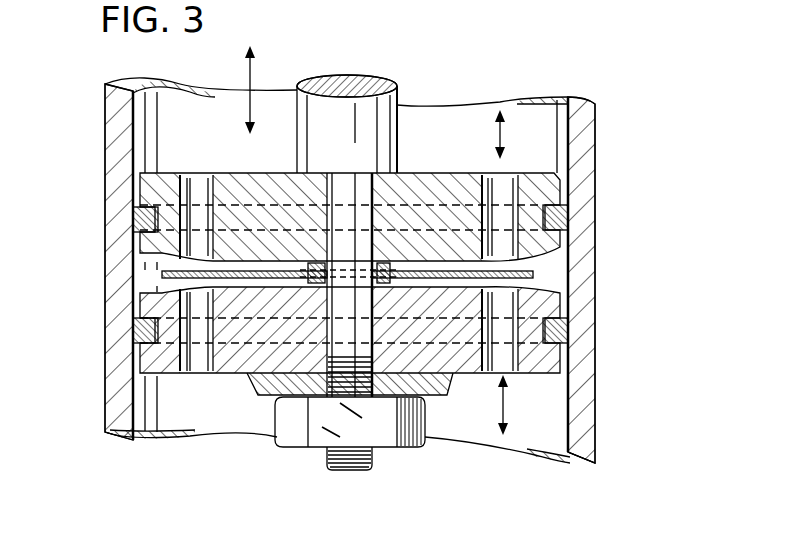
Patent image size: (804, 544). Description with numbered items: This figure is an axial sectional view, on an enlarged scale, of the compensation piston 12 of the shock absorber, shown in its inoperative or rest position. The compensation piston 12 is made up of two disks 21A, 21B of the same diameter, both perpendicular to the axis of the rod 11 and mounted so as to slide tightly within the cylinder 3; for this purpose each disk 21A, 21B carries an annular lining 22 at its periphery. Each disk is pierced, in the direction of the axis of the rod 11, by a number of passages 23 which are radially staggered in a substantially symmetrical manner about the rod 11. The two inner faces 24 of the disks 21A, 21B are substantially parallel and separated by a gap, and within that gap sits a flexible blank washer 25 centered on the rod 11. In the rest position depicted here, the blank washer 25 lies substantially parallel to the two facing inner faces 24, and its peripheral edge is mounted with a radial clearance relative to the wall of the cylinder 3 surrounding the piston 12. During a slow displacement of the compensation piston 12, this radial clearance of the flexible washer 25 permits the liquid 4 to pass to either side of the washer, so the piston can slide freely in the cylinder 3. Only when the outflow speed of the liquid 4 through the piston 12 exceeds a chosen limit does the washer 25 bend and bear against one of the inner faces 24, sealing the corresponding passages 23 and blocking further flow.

The cylinder 3 is at (95, 283).
The liquid 4 is at (443, 145).
The rod 11 is at (396, 114).
The compensation piston 12 is at (275, 165).
The disk 21A is at (550, 167).
The disk 21B is at (541, 380).
The annular lining 22 is at (570, 209).
The passages 23 is at (197, 175).
The inner faces 24 is at (572, 268).
The flexible blank washer 25 is at (133, 290).